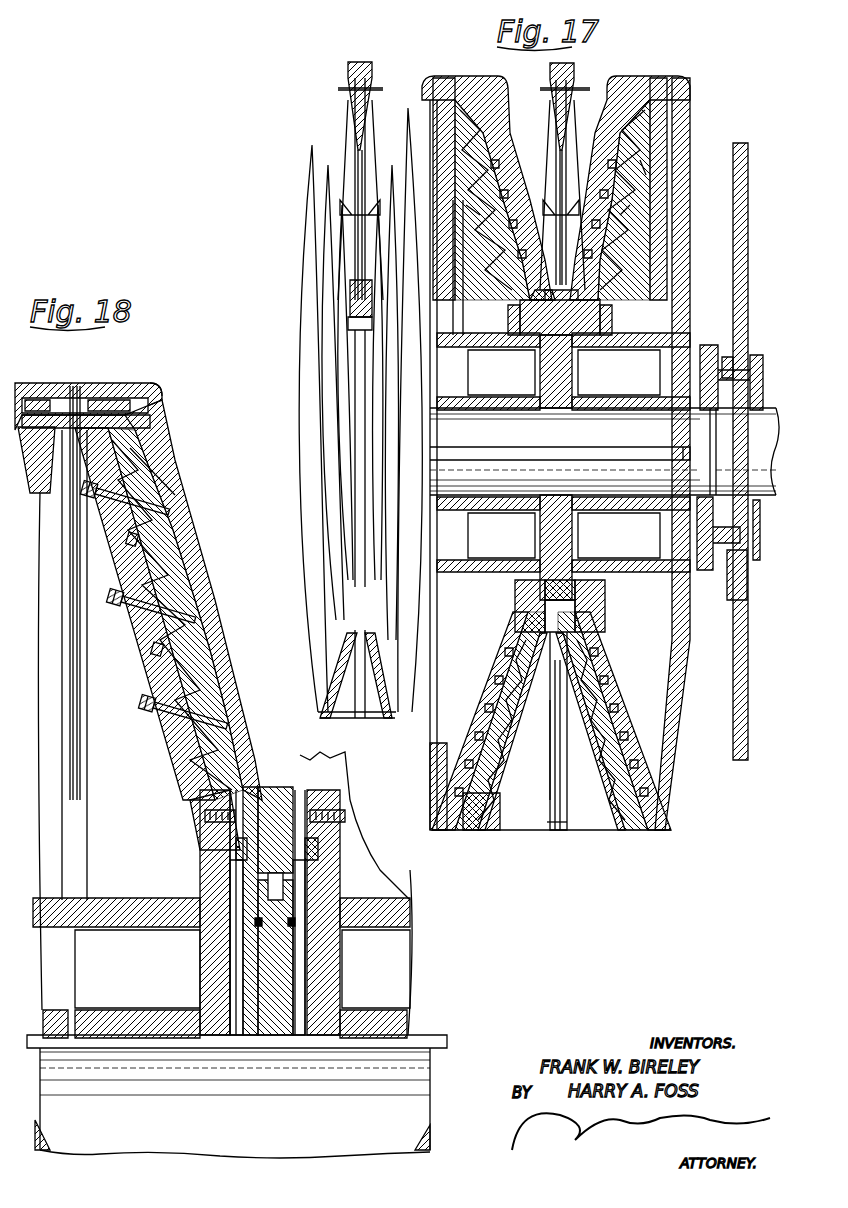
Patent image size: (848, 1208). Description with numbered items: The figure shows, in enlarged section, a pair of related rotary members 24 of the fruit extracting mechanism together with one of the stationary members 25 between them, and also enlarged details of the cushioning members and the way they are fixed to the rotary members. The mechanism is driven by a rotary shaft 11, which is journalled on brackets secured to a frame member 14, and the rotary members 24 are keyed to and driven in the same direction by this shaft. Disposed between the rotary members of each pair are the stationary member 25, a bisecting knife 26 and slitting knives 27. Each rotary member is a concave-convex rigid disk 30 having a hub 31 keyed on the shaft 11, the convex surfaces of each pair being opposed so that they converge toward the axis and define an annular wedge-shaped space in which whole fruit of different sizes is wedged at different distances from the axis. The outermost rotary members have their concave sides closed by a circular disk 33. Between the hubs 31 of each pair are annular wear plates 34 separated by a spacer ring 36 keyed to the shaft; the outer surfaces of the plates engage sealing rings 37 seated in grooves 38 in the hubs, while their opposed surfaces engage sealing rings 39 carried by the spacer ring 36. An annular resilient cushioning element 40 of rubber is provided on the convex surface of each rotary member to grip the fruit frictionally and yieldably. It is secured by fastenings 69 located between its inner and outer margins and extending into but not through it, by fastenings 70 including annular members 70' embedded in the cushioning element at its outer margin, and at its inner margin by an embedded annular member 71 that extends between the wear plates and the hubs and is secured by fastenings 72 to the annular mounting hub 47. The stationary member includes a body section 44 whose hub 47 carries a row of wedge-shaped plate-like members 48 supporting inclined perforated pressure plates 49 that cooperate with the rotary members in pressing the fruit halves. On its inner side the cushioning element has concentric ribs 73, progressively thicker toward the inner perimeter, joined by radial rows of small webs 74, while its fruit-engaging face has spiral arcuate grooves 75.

In FIG. 17, the rotary shaft 11 is at (611, 436).
In FIG. 18, the rotary shaft 11 is at (425, 1094).
In FIG. 17, the frame member 14 is at (745, 296).
In FIG. 17, the rotary member 24 is at (320, 142).
In FIG. 17, the stationary member 25 is at (349, 59).
In FIG. 17, the bisecting knife 26 is at (366, 113).
In FIG. 17, the slitting knife 27 is at (368, 154).
In FIG. 17, the concave-convex rigid disk 30 is at (501, 282).
In FIG. 18, the concave-convex rigid disk 30 is at (135, 636).
In FIG. 17, the hub 31 is at (505, 332).
In FIG. 18, the hub 31 is at (102, 905).
In FIG. 17, the circular disk 33 is at (684, 182).
In FIG. 17, the annular wear plate 34 is at (600, 322).
In FIG. 18, the annular wear plate 34 is at (262, 890).
In FIG. 17, the spacer ring 36 is at (540, 376).
In FIG. 18, the spacer ring 36 is at (275, 965).
In FIG. 17, the sealing ring 37 is at (590, 300).
In FIG. 18, the sealing ring 37 is at (312, 858).
In FIG. 18, the groove 38 is at (320, 850).
In FIG. 18, the sealing ring 39 is at (260, 922).
In FIG. 17, the annular resilient cushioning element 40 is at (506, 100).
In FIG. 18, the annular resilient cushioning element 40 is at (212, 551).
In FIG. 17, the body section 44 is at (585, 838).
In FIG. 17, the annular mounting hub 47 is at (355, 290).
In FIG. 18, the annular mounting hub 47 is at (280, 790).
In FIG. 17, the plate-like member 48 is at (532, 820).
In FIG. 17, the perforated pressure plate 49 is at (584, 774).
In FIG. 17, the fastening 69 is at (622, 252).
In FIG. 18, the fastening 69 is at (85, 492).
In FIG. 18, the fastening 70 is at (88, 678).
In FIG. 18, the annular member 70' is at (165, 375).
In FIG. 17, the annular member 71 is at (528, 304).
In FIG. 18, the annular member 71 is at (200, 805).
In FIG. 18, the fastening 72 is at (205, 830).
In FIG. 17, the concentric rib 73 is at (559, 207).
In FIG. 18, the concentric rib 73 is at (135, 452).
In FIG. 17, the web 74 is at (646, 175).
In FIG. 18, the web 74 is at (160, 462).
In FIG. 17, the arcuate groove 75 is at (526, 190).